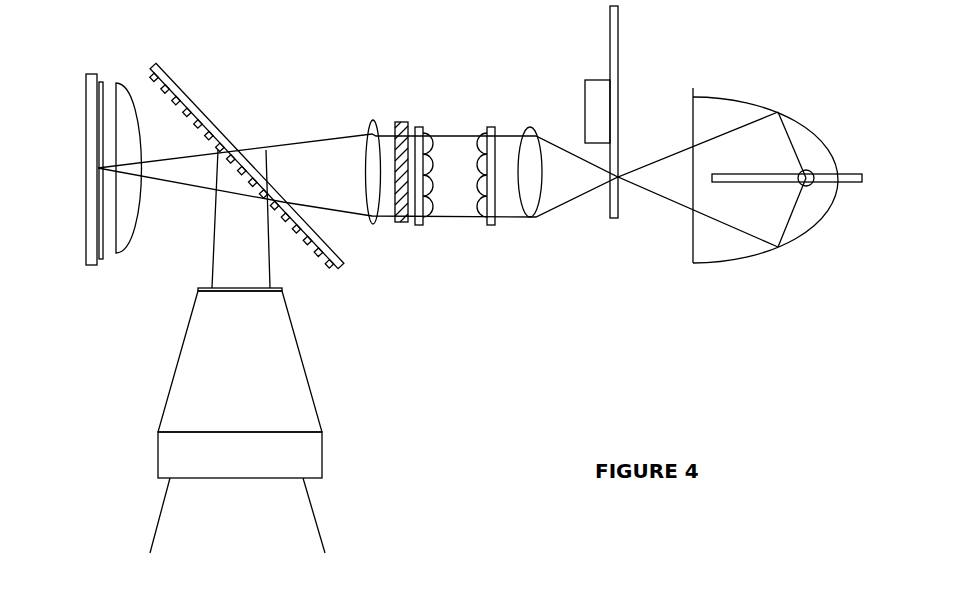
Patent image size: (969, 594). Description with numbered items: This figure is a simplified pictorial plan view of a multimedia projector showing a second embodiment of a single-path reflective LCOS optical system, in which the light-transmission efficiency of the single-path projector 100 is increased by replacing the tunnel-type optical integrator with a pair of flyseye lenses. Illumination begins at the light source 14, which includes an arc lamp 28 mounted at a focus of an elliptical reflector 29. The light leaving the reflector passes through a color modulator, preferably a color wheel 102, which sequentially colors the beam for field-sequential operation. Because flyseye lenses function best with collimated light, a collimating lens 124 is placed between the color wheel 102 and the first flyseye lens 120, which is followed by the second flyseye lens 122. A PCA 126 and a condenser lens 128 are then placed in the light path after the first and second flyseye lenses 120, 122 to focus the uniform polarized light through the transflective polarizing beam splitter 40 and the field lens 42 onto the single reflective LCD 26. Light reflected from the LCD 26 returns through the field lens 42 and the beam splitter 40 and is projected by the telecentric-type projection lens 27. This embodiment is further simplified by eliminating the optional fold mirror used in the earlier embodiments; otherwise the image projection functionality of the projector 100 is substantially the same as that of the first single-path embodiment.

The single-path multimedia projector 100 is at (114, 364).
The reflective liquid crystal display 26 is at (93, 266).
The field lens 42 is at (128, 233).
The transflective polarizing beam splitter 40 is at (192, 100).
The telecentric-type projection lens 27 is at (312, 467).
The condenser lens 128 is at (372, 132).
The second flyseye lens 122 is at (422, 125).
The PCA 126 is at (418, 227).
The first flyseye lens 120 is at (490, 125).
The collimating lens 124 is at (532, 207).
The color wheel 102 is at (617, 58).
The light source 14 is at (782, 156).
The arc lamp 28 is at (814, 168).
The elliptical reflector 29 is at (803, 232).